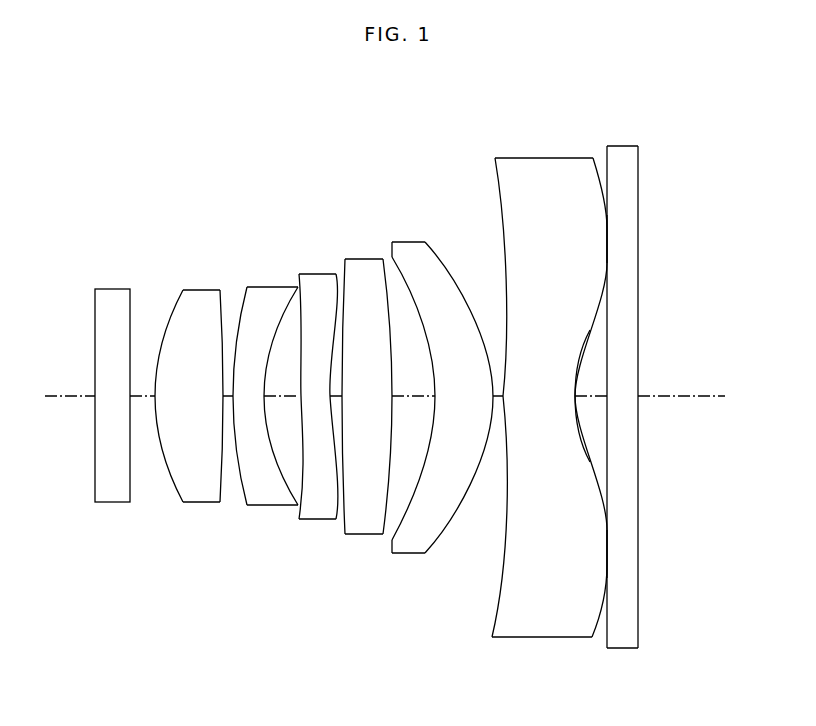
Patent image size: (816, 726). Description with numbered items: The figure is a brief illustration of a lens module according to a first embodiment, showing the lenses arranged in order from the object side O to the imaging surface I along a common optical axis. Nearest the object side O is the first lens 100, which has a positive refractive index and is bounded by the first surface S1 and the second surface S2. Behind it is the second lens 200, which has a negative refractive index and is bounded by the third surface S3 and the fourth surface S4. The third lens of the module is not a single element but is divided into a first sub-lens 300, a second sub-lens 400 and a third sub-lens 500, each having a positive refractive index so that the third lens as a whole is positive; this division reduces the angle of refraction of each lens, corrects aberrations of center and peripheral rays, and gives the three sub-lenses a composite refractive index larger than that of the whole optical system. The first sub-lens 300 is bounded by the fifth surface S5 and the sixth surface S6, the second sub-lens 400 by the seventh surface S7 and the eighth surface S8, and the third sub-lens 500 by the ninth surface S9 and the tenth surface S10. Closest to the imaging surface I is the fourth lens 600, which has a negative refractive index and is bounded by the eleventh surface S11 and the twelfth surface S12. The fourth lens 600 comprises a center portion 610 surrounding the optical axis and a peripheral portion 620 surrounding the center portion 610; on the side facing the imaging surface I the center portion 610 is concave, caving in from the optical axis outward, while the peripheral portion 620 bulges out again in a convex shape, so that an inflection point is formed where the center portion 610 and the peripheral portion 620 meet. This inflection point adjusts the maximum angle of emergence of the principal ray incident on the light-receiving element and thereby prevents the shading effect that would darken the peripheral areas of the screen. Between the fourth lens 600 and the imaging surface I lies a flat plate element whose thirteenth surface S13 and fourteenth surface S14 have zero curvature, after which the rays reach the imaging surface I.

The object side O is at (110, 285).
The first lens 100 is at (181, 401).
The second lens 200 is at (259, 405).
The first sub-lens 300 is at (308, 408).
The second sub-lens 400 is at (356, 408).
The third sub-lens 500 is at (435, 398).
The fourth lens 600 is at (577, 398).
The center portion 610 is at (576, 390).
The peripheral portion 620 is at (607, 228).
The imaging surface I is at (647, 396).
The first surface S1 is at (173, 488).
The second surface S2 is at (222, 498).
The third surface S3 is at (242, 495).
The fourth surface S4 is at (286, 485).
The fifth surface S5 is at (297, 510).
The sixth surface S6 is at (338, 472).
The seventh surface S7 is at (342, 513).
The eighth surface S8 is at (387, 510).
The ninth surface S9 is at (398, 520).
The tenth surface S10 is at (440, 533).
The eleventh surface S11 is at (488, 607).
The twelfth surface S12 is at (597, 627).
The thirteenth surface S13 is at (602, 638).
The fourteenth surface S14 is at (637, 628).